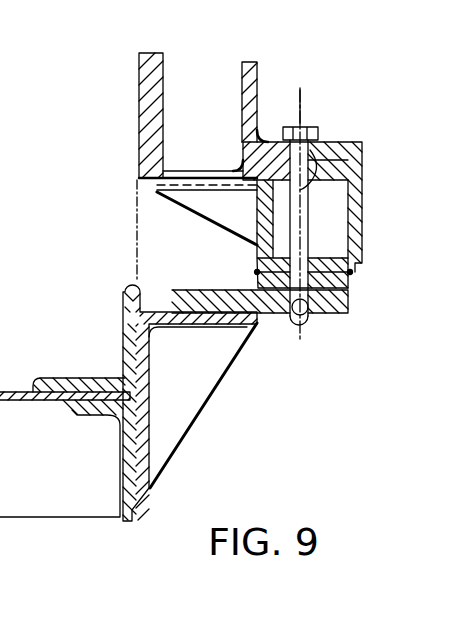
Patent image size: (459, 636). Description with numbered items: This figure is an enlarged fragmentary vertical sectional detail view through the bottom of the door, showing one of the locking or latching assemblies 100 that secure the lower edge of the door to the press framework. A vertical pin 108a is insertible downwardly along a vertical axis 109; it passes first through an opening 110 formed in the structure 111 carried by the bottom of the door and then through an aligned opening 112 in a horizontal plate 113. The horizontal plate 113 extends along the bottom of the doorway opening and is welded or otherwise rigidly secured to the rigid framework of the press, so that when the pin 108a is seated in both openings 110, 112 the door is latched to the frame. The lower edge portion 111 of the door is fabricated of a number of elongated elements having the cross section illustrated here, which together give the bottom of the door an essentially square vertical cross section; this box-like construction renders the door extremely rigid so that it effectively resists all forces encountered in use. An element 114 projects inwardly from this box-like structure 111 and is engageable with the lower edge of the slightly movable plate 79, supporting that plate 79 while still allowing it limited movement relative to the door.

The slightly movable plate 79 is at (138, 103).
The locking or latching assembly 100 is at (315, 97).
The vertical pin 108a is at (300, 325).
The vertical axis 109 is at (302, 112).
The opening 110 is at (306, 183).
The lower edge portion of the door 111 is at (362, 233).
The opening 112 is at (307, 320).
The horizontal plate 113 is at (230, 290).
The inwardly projecting element 114 is at (170, 202).